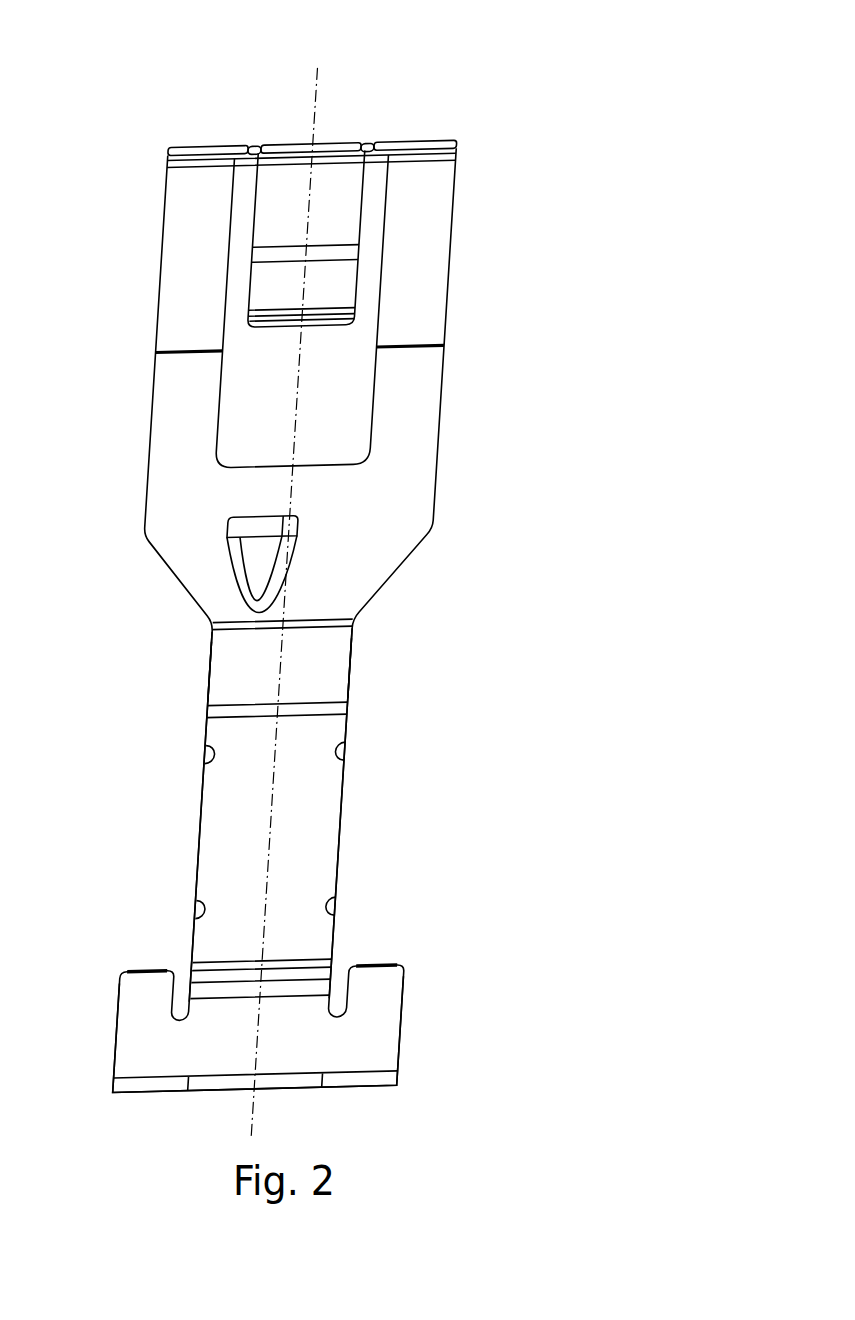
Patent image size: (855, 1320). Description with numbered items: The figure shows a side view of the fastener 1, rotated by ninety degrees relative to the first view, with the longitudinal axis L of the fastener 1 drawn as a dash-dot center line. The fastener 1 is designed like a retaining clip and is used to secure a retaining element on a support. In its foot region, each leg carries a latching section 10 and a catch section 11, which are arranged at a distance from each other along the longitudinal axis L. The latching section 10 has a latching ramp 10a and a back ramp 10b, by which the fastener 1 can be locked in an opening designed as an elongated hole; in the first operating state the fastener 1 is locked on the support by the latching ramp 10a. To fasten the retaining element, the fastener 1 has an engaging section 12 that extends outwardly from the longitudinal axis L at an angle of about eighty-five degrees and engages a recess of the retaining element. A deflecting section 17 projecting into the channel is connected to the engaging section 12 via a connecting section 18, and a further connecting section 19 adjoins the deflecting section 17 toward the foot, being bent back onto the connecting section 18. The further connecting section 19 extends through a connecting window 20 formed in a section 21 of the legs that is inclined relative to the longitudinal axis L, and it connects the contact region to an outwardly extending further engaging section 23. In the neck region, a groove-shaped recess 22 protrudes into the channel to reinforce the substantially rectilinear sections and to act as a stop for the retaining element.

The fastener 1 is at (467, 675).
The longitudinal axis L is at (322, 70).
The latching section 10 is at (362, 652).
The latching ramp 10a is at (222, 652).
The back ramp 10b is at (212, 815).
The catch section 11 is at (400, 955).
The engaging section 12 is at (413, 148).
The deflecting section 17 is at (360, 262).
The connecting section 18 is at (350, 190).
The further connecting section 19 is at (357, 298).
The connecting window 20 is at (327, 435).
The section of the legs 21 is at (173, 230).
The groove-shaped recess 22 is at (248, 560).
The further engaging section 23 is at (255, 317).